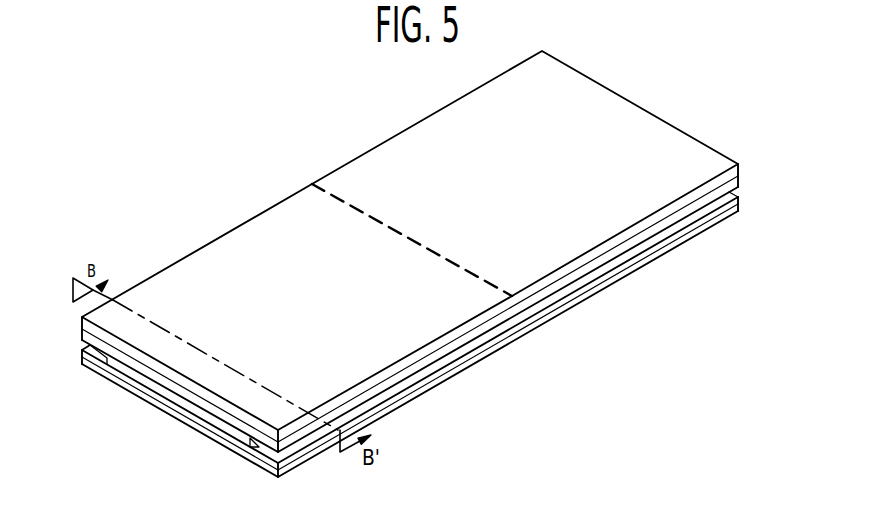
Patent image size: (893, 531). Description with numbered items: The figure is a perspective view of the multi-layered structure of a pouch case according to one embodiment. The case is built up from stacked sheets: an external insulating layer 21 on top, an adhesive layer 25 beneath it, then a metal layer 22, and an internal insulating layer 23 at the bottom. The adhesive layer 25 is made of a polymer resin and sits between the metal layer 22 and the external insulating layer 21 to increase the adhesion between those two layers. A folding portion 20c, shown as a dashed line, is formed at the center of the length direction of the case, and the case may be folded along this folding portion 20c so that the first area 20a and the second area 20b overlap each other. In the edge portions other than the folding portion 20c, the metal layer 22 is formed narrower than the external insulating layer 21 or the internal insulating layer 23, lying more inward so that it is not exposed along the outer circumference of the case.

The first area 20a is at (231, 228).
The second area 20b is at (408, 126).
The folding portion 20c is at (487, 287).
The external insulating layer 21 is at (175, 377).
The adhesive layer 25 is at (185, 397).
The metal layer 22 is at (205, 420).
The internal insulating layer 23 is at (217, 438).